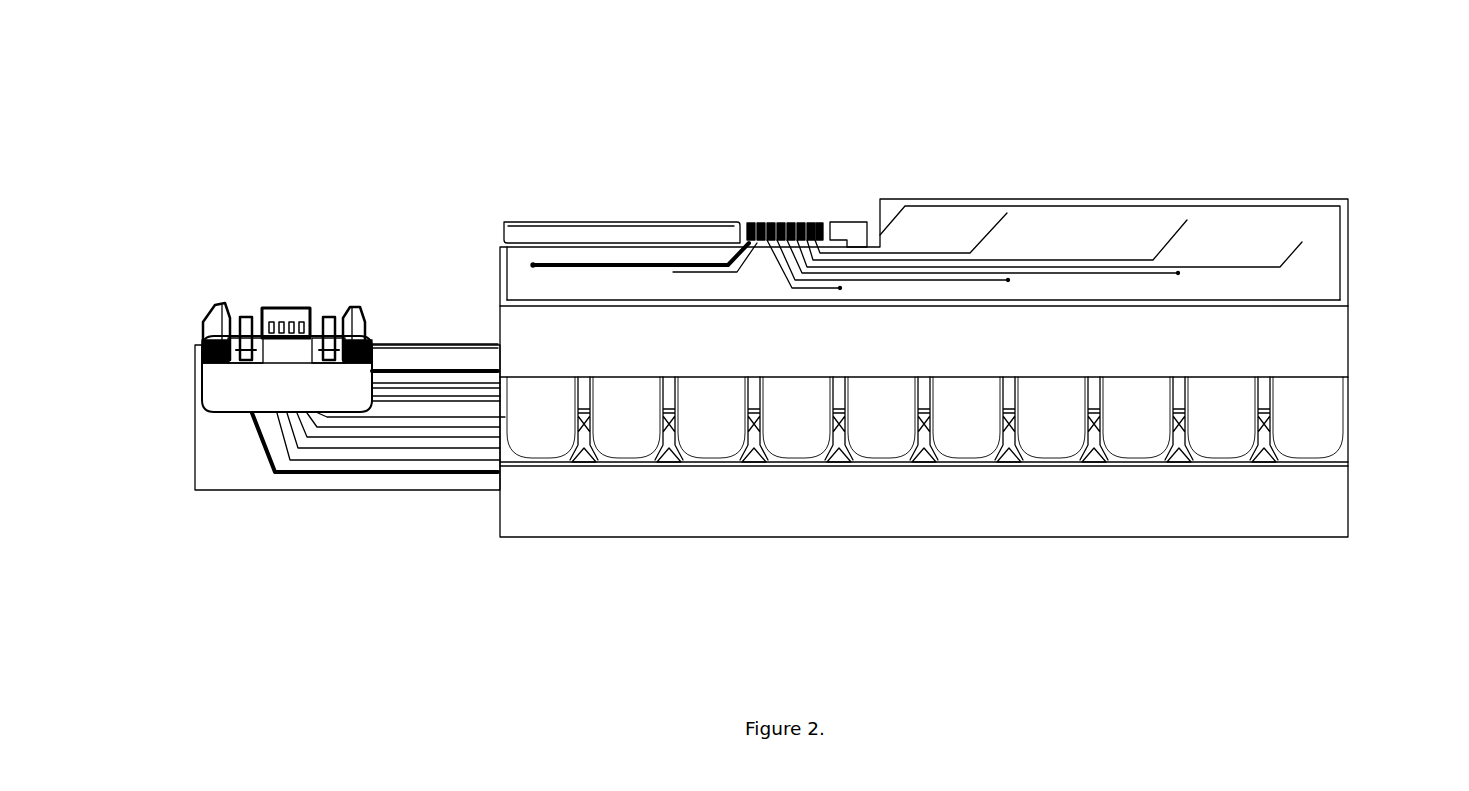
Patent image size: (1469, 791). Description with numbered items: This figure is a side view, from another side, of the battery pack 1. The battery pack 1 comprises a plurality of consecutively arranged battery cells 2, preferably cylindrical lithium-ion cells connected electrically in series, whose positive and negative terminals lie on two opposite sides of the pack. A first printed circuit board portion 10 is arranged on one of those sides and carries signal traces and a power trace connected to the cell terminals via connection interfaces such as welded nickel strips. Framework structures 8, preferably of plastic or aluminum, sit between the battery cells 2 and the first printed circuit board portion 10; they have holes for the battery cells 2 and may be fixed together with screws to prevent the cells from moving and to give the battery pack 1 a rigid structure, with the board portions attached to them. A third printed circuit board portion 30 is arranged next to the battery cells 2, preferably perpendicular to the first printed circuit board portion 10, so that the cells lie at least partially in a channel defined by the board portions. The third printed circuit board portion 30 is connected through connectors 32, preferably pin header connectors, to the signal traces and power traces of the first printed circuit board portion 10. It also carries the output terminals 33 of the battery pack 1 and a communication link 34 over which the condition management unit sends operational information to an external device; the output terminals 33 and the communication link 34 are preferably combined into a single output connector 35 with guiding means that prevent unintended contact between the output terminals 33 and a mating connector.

The battery pack 1 is at (782, 354).
The battery cells 2 is at (1310, 420).
The framework structures 8 is at (1213, 345).
The first printed circuit board portion 10 is at (1243, 233).
The third printed circuit board portion 30 is at (232, 460).
The connectors 32 is at (777, 225).
The output terminals 33 is at (247, 323).
The communication link 34 is at (285, 307).
The output connector 35 is at (253, 283).